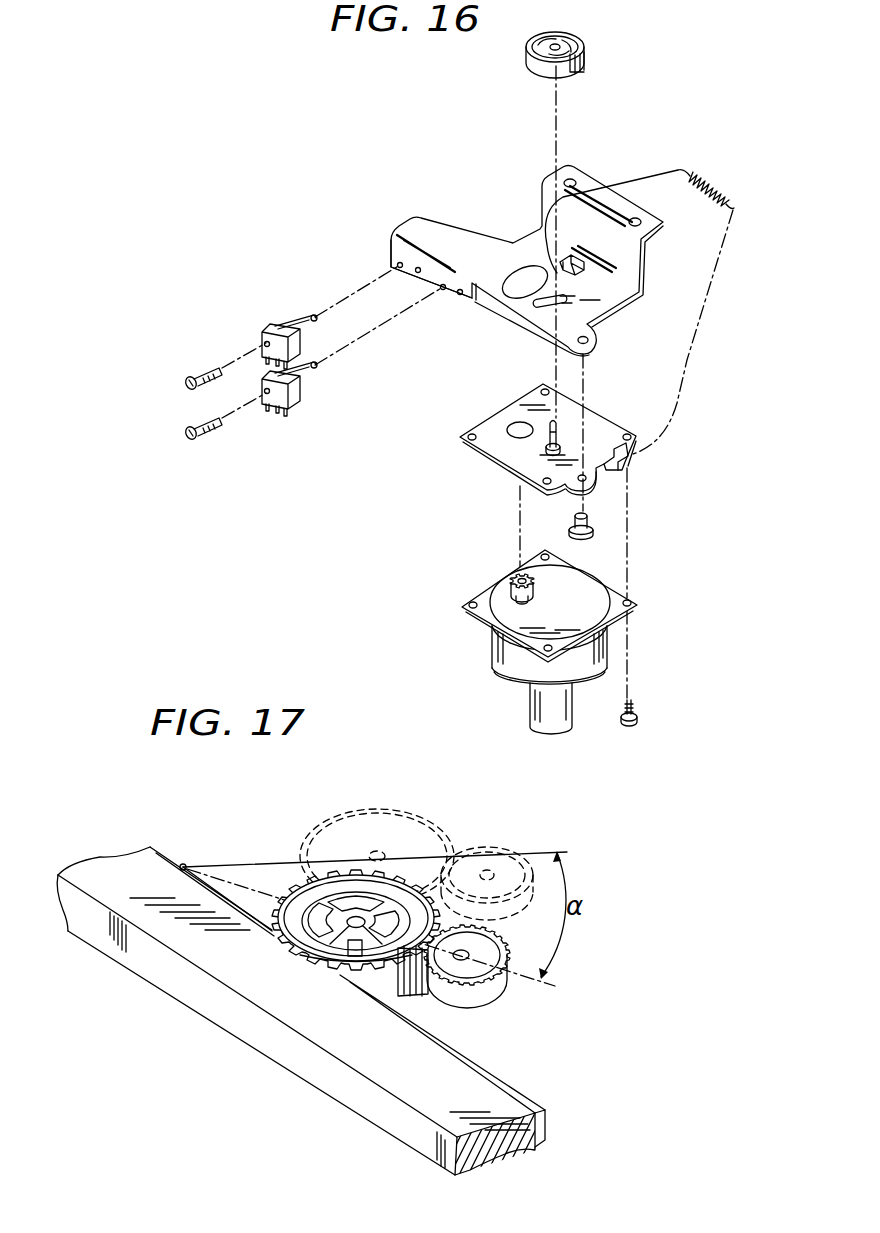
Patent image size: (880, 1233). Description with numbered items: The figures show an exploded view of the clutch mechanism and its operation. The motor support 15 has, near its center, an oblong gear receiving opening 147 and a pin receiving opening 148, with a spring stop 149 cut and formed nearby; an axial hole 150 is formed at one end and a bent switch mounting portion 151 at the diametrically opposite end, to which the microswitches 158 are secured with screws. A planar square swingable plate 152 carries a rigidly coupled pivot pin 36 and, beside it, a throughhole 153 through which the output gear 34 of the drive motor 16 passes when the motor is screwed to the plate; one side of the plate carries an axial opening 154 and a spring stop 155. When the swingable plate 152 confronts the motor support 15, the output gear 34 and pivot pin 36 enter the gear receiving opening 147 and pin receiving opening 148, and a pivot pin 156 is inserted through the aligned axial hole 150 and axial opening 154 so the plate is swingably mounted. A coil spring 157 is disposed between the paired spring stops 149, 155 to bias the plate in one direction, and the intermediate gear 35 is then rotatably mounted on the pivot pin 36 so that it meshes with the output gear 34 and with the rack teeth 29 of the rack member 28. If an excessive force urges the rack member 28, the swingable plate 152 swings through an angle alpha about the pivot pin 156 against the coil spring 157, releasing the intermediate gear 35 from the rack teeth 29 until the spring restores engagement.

In FIG. 16, the motor support 15 is at (486, 243).
In FIG. 16, the drive motor 16 is at (492, 657).
In FIG. 17, the rack member 28 is at (362, 1106).
In FIG. 17, the rack teeth 29 is at (322, 968).
In FIG. 16, the output gear 34 is at (512, 586).
In FIG. 17, the output gear 34 is at (483, 851).
In FIG. 16, the intermediate gear 35 is at (592, 57).
In FIG. 17, the intermediate gear 35 is at (322, 823).
In FIG. 16, the pivot pin 36 is at (560, 431).
In FIG. 16, the gear receiving opening 147 is at (513, 293).
In FIG. 16, the pin receiving opening 148 is at (545, 307).
In FIG. 16, the spring stop 149 is at (578, 270).
In FIG. 16, the axial hole 150 is at (592, 343).
In FIG. 16, the switch mounting portion 151 is at (391, 257).
In FIG. 16, the swingable plate 152 is at (497, 451).
In FIG. 16, the throughhole 153 is at (517, 423).
In FIG. 16, the axial opening 154 is at (593, 484).
In FIG. 16, the spring stop 155 is at (628, 466).
In FIG. 16, the pivot pin 156 is at (593, 528).
In FIG. 17, the pivot pin 156 is at (183, 864).
In FIG. 16, the coil spring 157 is at (718, 186).
In FIG. 16, the microswitches 158 is at (262, 340).